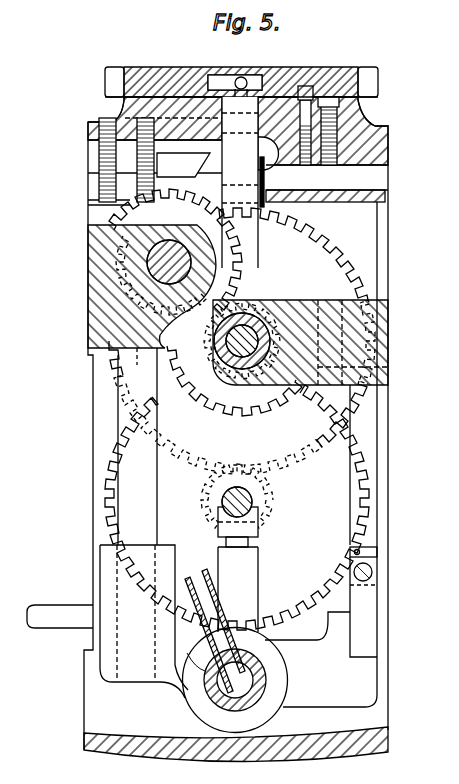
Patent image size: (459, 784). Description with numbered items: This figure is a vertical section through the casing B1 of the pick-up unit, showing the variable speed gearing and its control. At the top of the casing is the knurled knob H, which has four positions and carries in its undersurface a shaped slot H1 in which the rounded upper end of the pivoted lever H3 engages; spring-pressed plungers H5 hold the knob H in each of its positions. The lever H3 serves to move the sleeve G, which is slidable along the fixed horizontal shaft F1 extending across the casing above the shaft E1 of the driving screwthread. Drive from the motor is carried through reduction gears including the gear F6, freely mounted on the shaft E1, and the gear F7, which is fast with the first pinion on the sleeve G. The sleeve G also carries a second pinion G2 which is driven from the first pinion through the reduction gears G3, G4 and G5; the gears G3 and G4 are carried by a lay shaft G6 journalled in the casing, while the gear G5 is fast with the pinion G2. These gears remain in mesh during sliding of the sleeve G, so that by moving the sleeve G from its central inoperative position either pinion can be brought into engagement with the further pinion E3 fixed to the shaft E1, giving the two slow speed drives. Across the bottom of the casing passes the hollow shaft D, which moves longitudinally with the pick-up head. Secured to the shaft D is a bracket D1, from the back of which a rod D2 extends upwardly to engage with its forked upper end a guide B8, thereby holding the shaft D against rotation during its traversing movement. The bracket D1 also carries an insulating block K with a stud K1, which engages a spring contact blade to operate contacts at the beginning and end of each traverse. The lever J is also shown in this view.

The knurled knob H is at (272, 67).
The shaped slot H1 is at (226, 78).
The pivoted lever H3 is at (233, 145).
The spring-pressed plunger H5 is at (306, 86).
The casing B1 is at (363, 128).
The reduction gear G3 is at (197, 193).
The reduction gear G4 is at (160, 224).
The lay shaft G6 is at (133, 262).
The reduction gear F7 is at (325, 242).
The sleeve G is at (244, 316).
The reduction gear G5 is at (265, 295).
The fixed horizontal shaft F1 is at (273, 317).
The guide B8 is at (137, 446).
The second pinion G2 is at (225, 388).
The shaft of the screwthread E1 is at (239, 486).
The rod D2 is at (133, 493).
The further pinion E3 is at (257, 503).
The reduction gear F6 is at (273, 501).
The stud K1 is at (357, 563).
The insulating block K is at (367, 602).
The bracket D1 is at (360, 632).
The hollow shaft D is at (207, 692).
The operating lever J is at (65, 617).